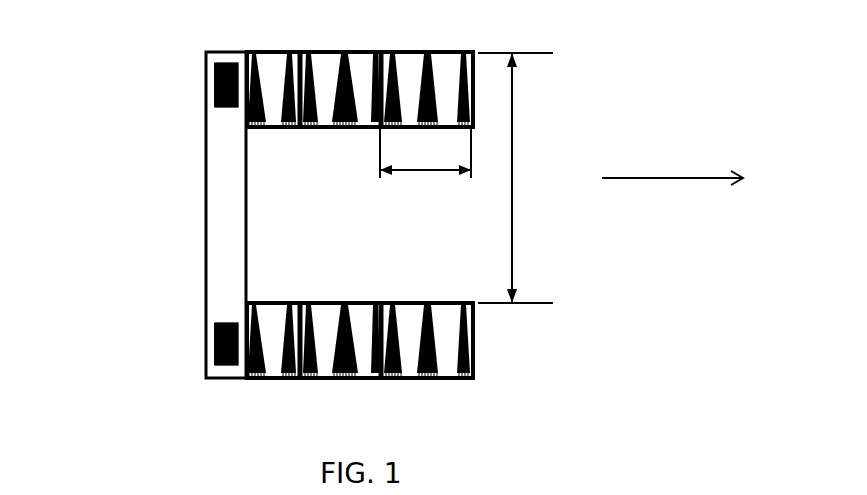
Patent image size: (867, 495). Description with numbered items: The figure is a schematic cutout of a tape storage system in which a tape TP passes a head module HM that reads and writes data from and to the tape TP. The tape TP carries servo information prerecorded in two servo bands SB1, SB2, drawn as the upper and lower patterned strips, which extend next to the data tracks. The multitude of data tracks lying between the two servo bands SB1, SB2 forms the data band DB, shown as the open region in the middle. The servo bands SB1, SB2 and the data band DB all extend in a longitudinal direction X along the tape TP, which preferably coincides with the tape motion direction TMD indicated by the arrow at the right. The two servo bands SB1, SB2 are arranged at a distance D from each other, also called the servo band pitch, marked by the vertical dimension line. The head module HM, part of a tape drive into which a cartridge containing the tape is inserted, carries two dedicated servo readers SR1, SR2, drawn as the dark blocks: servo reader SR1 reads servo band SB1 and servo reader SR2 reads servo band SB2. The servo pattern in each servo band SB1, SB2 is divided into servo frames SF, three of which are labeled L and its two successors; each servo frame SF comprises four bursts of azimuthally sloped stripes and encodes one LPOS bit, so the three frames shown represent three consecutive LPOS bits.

The head module HM is at (206, 217).
The servo band SB1 is at (188, 96).
The servo band SB2 is at (178, 346).
The servo reader SR1 is at (210, 107).
The servo reader SR2 is at (217, 323).
The data band DB is at (322, 202).
The servo frame SF is at (403, 180).
The distance D is at (518, 178).
The tape motion direction TMD is at (672, 161).
The longitudinal direction X is at (672, 198).
The tape TP is at (562, 367).
The servo frame label L is at (360, 69).